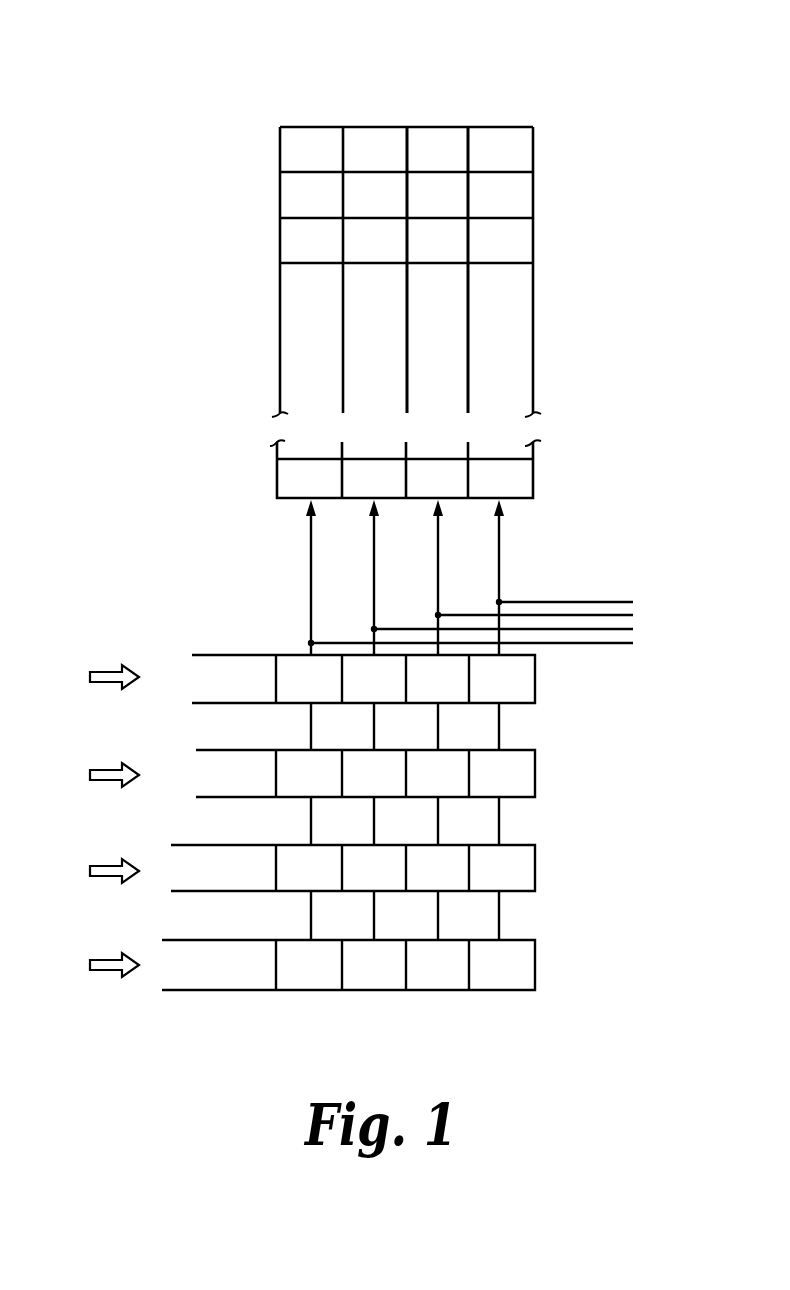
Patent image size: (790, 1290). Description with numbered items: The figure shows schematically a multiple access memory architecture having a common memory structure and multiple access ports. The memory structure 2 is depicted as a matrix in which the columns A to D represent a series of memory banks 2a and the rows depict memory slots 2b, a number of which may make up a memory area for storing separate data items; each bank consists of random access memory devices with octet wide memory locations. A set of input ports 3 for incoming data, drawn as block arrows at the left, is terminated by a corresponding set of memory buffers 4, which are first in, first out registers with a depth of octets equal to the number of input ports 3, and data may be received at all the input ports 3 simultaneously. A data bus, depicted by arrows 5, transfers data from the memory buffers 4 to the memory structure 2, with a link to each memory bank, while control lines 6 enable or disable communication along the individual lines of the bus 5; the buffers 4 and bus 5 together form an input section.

The memory structure 2 is at (565, 87).
The memory banks 2a is at (437, 76).
The memory slots 2b is at (256, 158).
The input ports 3 is at (110, 689).
The memory buffers 4 is at (537, 677).
The data bus 5 is at (311, 535).
The control lines 6 is at (652, 577).